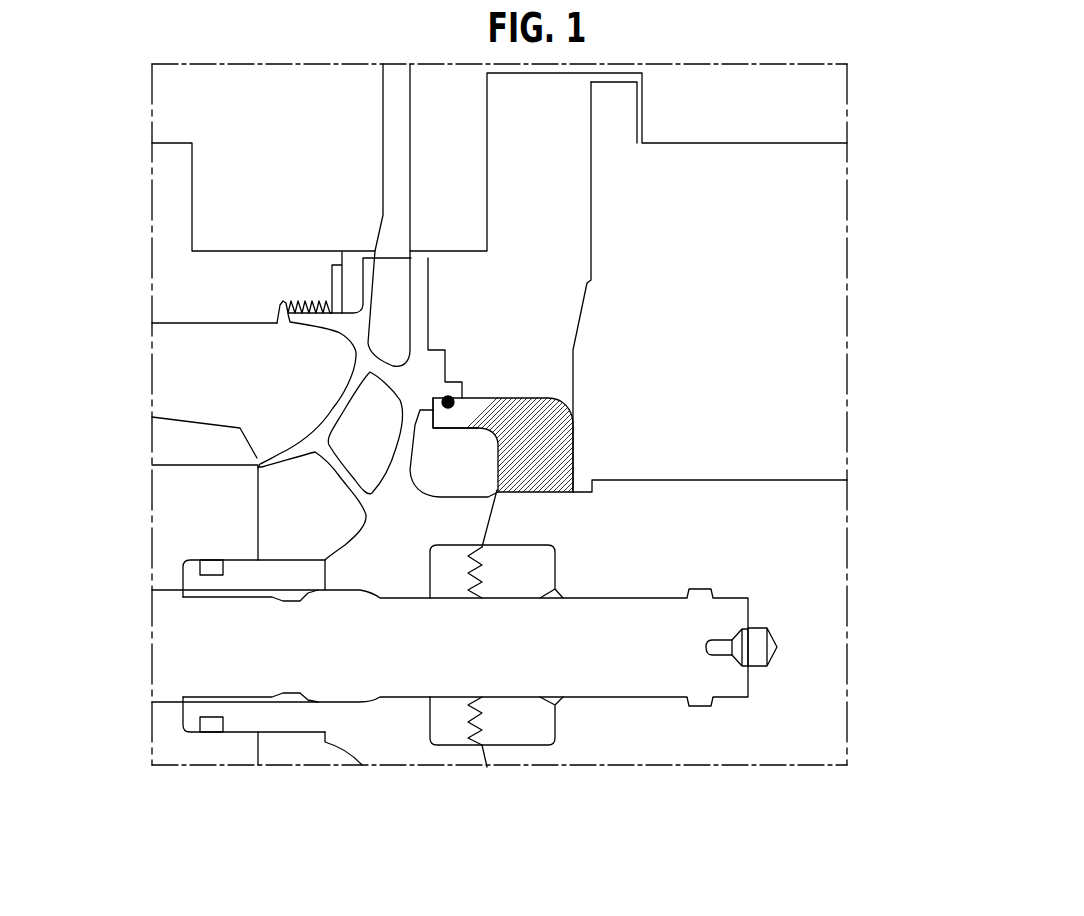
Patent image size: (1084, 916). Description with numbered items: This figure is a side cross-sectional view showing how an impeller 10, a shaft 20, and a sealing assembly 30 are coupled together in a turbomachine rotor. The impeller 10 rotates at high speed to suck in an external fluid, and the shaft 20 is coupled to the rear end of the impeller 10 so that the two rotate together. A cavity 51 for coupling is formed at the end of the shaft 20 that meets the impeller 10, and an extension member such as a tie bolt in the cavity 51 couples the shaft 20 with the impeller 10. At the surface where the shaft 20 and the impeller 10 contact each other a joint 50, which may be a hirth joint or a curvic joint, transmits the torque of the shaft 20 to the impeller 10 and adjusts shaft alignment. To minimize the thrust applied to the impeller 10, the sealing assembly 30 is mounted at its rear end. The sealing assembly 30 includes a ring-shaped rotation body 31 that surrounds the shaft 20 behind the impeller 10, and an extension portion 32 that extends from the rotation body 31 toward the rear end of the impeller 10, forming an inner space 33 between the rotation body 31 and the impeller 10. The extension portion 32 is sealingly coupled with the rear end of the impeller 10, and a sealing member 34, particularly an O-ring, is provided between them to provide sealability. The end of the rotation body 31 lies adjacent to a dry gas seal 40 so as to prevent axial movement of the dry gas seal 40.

The impeller 10 is at (332, 449).
The shaft 20 is at (770, 538).
The sealing assembly 30 is at (542, 396).
The rotation body 31 is at (574, 412).
The extension portion 32 is at (472, 400).
The inner space 33 is at (437, 473).
The sealing member 34 is at (440, 398).
The dry gas seal 40 is at (768, 346).
The joint 50 is at (487, 530).
The cavity 51 is at (452, 578).